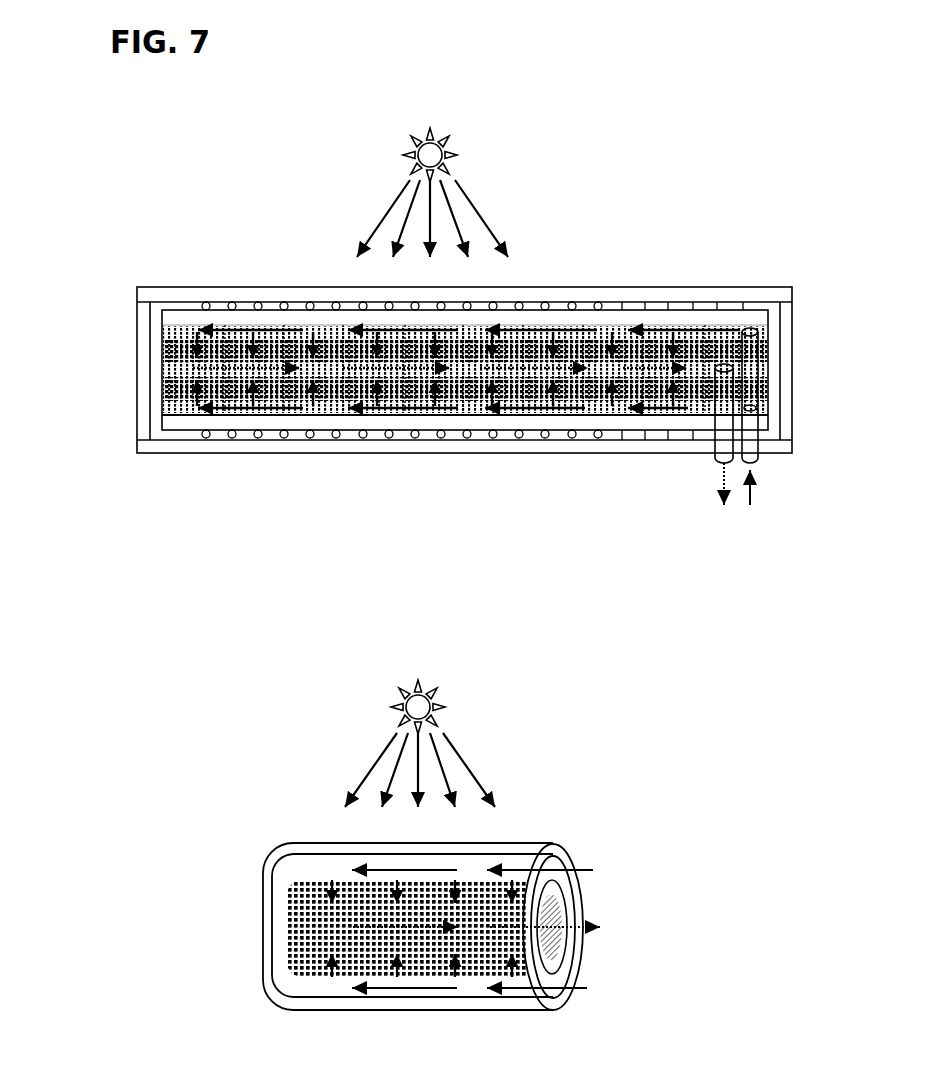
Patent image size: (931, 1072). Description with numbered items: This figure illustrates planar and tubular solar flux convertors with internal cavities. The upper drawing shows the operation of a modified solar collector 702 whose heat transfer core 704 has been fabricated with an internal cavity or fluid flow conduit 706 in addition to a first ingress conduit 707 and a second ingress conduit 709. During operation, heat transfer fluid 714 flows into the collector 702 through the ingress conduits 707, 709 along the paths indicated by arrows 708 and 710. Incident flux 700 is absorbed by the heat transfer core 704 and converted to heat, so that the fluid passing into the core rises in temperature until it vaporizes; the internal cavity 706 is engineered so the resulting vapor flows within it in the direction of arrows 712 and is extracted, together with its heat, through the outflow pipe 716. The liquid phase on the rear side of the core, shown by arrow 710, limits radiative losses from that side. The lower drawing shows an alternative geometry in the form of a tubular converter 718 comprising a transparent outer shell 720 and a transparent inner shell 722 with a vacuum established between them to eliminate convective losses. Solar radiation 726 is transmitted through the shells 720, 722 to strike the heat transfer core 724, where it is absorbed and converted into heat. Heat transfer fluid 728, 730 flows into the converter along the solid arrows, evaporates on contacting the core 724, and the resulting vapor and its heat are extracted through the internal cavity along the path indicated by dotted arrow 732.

The incident flux 700 is at (487, 215).
The modified solar collector 702 is at (407, 357).
The heat transfer core 704 is at (168, 385).
The internal cavity 706 is at (180, 368).
The first ingress conduit 707 is at (558, 325).
The arrows 708 is at (675, 325).
The second ingress conduit 709 is at (607, 410).
The arrow 710 is at (258, 413).
The arrows 712 is at (418, 375).
The heat transfer fluid 714 is at (760, 495).
The outflow pipe 716 is at (720, 492).
The tubular converter 718 is at (423, 921).
The transparent outer shell 720 is at (300, 843).
The transparent inner shell 722 is at (278, 897).
The heat transfer core 724 is at (300, 963).
The solar radiation 726 is at (475, 767).
The heat transfer fluid 728 is at (585, 997).
The heat transfer fluid 730 is at (583, 857).
The dotted arrow 732 is at (603, 927).